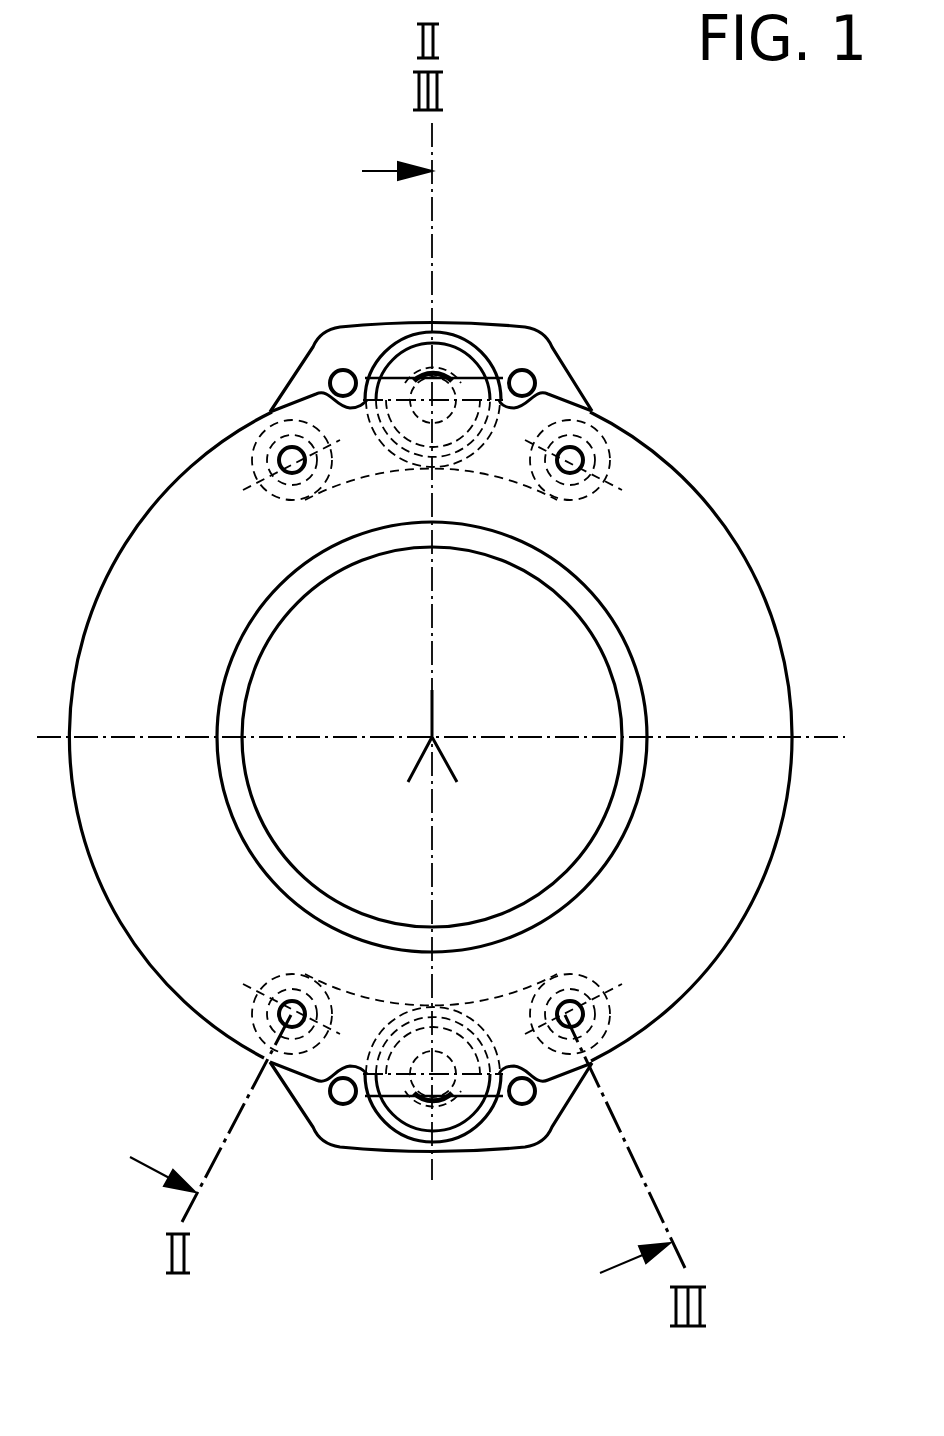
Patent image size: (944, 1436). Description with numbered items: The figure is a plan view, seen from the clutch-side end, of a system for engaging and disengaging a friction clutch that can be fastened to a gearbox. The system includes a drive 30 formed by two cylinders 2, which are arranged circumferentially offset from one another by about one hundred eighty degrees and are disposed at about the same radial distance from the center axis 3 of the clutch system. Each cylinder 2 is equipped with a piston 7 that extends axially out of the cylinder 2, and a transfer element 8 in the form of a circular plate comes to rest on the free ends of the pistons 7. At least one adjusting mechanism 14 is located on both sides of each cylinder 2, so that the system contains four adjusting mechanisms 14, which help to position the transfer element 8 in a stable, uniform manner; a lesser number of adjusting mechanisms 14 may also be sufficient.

The cylinder 2 is at (487, 358).
The center axis 3 is at (433, 736).
The piston 7 is at (452, 378).
The transfer element 8 is at (207, 530).
The adjusting mechanism 14 is at (570, 462).
The drive 30 is at (378, 325).